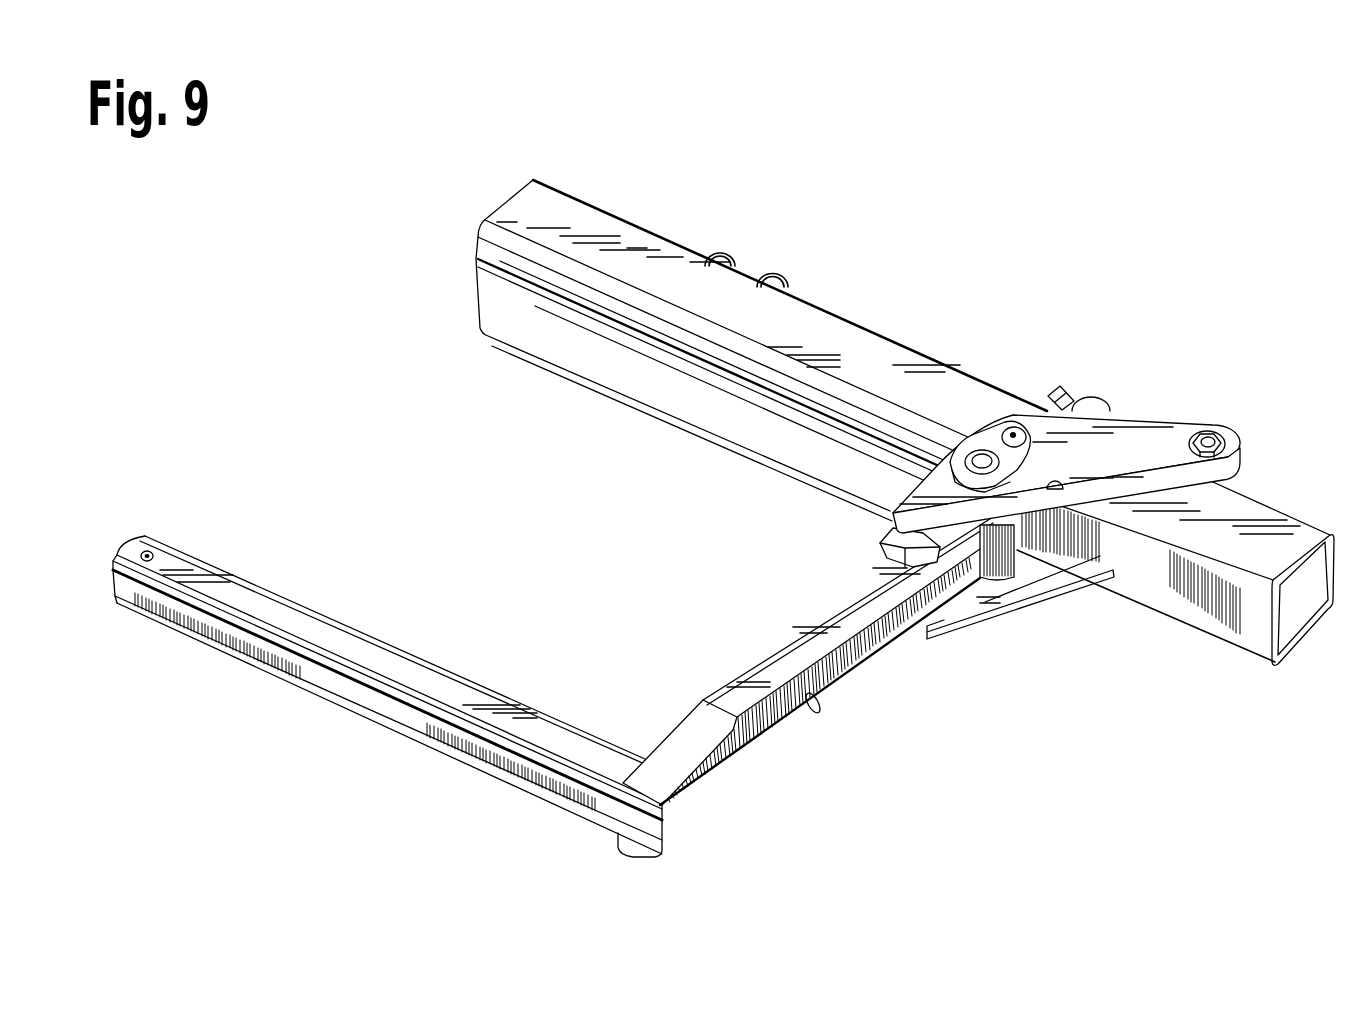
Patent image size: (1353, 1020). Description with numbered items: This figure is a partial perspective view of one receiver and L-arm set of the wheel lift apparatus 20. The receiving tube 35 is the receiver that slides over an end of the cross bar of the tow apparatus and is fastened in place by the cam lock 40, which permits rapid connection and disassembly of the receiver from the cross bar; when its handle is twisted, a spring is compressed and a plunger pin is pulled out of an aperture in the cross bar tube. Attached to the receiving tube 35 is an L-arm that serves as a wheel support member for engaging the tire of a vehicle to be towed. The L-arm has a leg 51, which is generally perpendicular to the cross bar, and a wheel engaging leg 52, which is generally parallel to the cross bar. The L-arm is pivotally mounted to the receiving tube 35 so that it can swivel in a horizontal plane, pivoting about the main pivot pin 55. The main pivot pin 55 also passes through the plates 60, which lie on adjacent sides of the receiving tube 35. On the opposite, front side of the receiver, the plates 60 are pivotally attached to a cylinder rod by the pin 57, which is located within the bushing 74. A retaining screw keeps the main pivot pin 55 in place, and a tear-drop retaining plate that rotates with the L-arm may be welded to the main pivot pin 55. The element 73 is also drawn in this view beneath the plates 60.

The wheel lift apparatus 20 is at (298, 383).
The receiving tube 35 is at (593, 352).
The cam lock 40 is at (1093, 400).
The leg 51 is at (863, 662).
The wheel engaging leg 52 is at (405, 715).
The main pivot pin 55 is at (978, 456).
The pin 57 is at (1209, 430).
The plate 60 is at (1111, 470).
The spacer 73 is at (990, 558).
The bushing 74 is at (1228, 478).